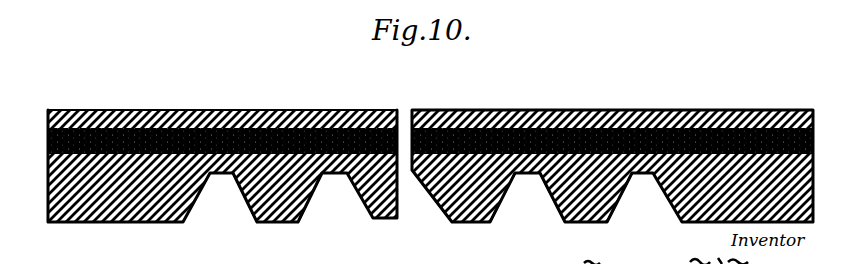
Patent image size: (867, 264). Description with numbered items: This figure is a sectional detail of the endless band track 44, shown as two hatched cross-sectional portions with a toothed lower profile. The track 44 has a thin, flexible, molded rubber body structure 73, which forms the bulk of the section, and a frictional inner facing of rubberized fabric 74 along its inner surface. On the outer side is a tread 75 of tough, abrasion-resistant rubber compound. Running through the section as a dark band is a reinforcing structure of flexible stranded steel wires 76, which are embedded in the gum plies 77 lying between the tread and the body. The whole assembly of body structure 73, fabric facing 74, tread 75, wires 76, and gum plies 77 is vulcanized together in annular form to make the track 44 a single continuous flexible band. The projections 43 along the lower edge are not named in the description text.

The teeth 43 is at (282, 224).
The track 44 is at (609, 100).
The molded rubber body structure 73 is at (72, 224).
The frictional inner facing of rubberized fabric 74 is at (163, 224).
The tread 75 is at (122, 110).
The reinforcing structure of flexible stranded steel wires 76 is at (245, 131).
The gum plies 77 is at (540, 110).